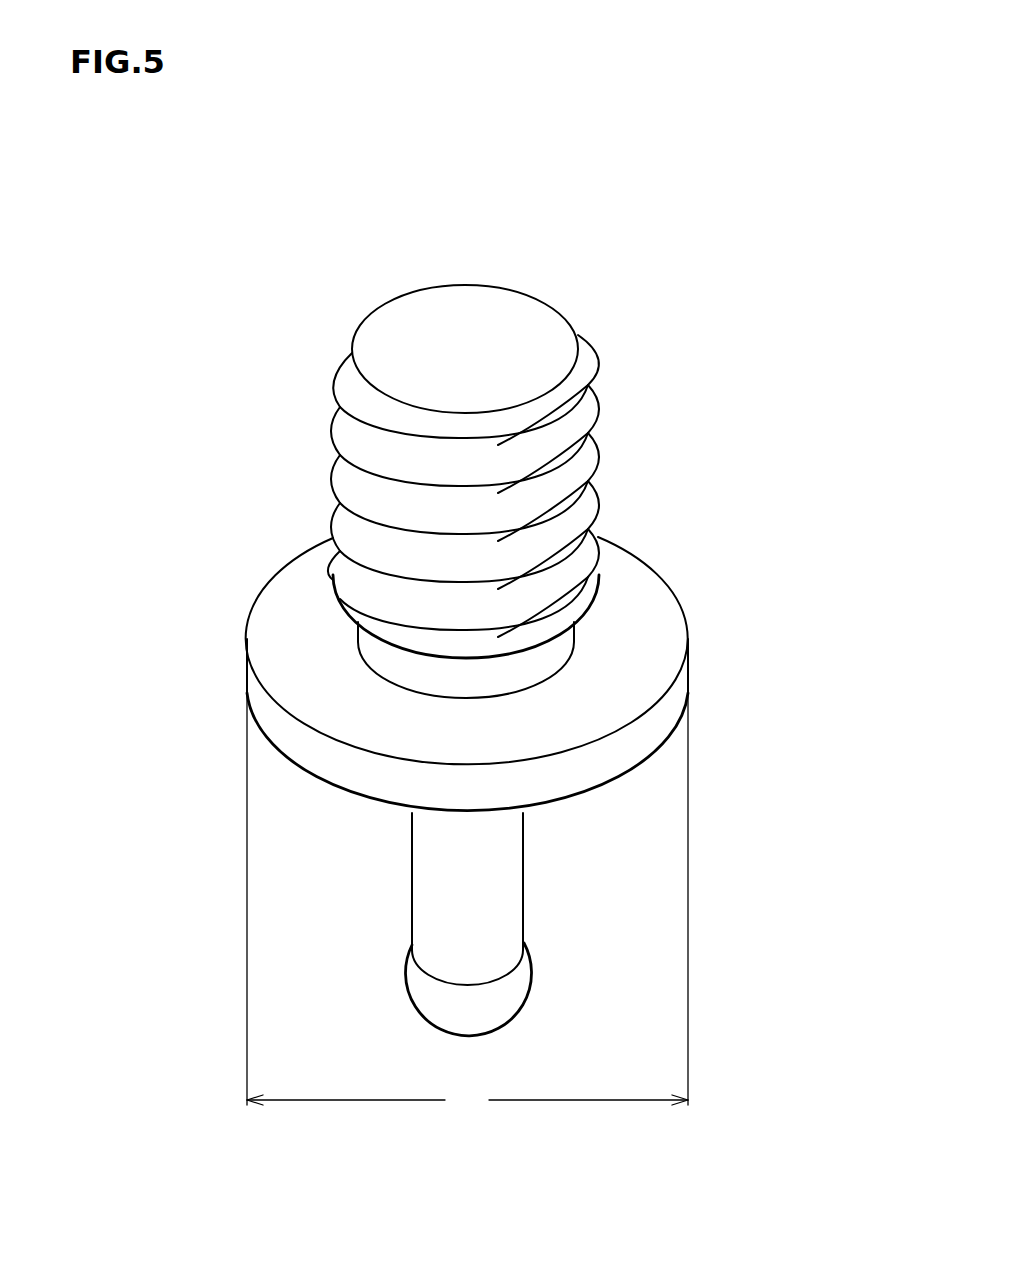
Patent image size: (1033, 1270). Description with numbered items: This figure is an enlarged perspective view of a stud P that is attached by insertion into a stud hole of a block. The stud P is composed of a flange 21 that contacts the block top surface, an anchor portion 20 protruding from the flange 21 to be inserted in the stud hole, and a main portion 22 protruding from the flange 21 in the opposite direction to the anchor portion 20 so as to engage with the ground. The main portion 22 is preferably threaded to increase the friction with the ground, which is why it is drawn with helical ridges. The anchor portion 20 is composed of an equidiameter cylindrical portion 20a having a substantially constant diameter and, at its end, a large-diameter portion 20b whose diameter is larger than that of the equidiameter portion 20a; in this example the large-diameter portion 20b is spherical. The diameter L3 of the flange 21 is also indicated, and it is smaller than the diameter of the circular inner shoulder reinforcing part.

The stud P is at (640, 318).
The main portion 22 is at (646, 427).
The flange 21 is at (635, 623).
The anchor portion 20 is at (618, 880).
The equidiameter cylindrical portion 20a is at (507, 898).
The large-diameter portion 20b is at (507, 990).
The diameter of the flange L3 is at (467, 904).